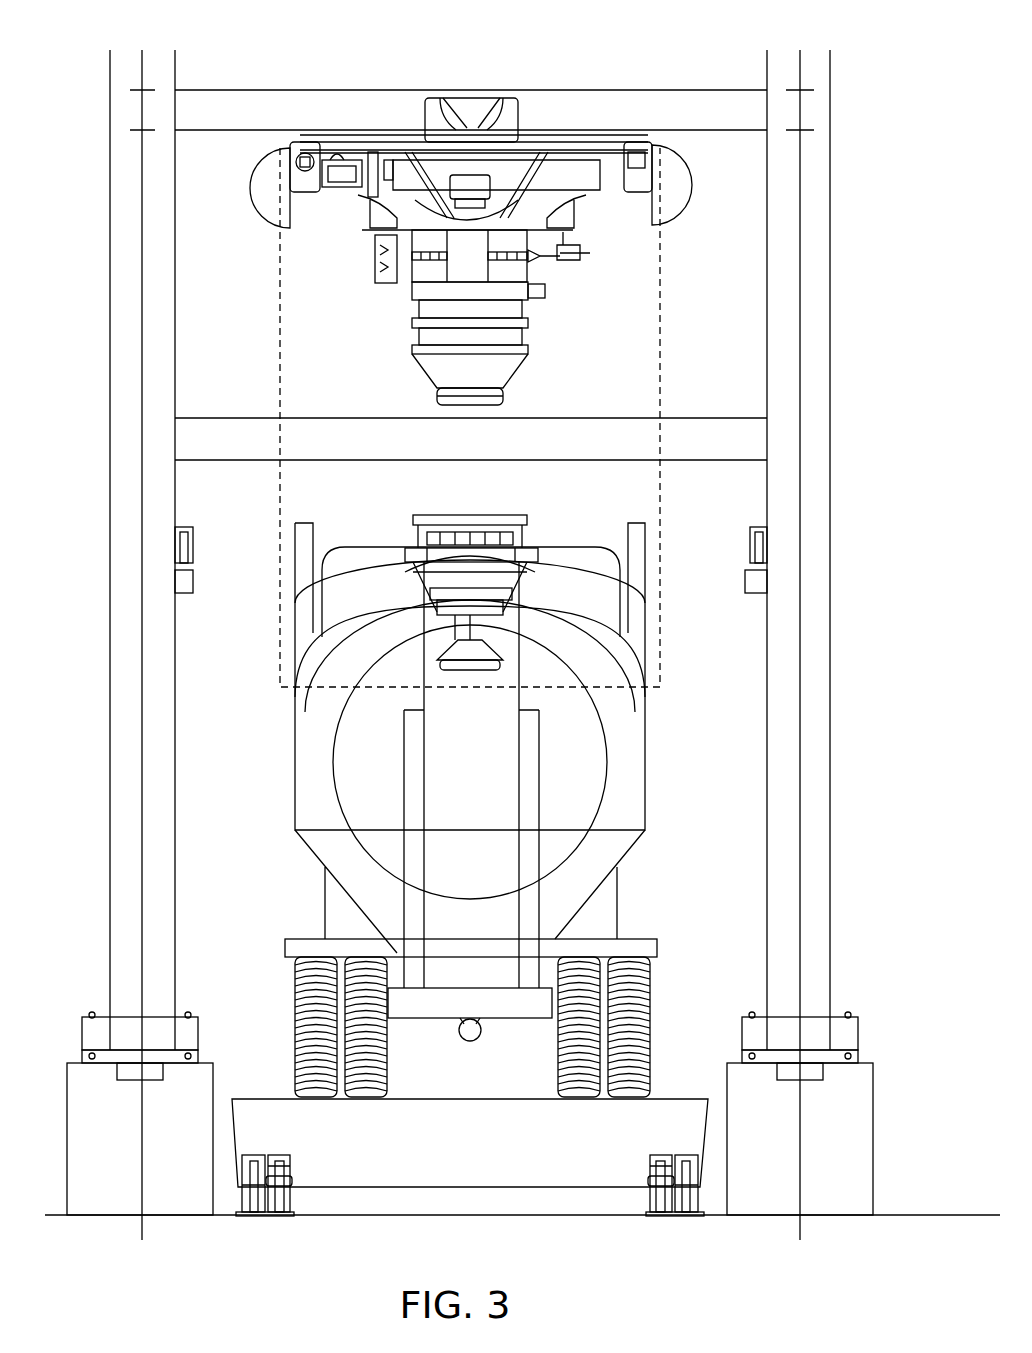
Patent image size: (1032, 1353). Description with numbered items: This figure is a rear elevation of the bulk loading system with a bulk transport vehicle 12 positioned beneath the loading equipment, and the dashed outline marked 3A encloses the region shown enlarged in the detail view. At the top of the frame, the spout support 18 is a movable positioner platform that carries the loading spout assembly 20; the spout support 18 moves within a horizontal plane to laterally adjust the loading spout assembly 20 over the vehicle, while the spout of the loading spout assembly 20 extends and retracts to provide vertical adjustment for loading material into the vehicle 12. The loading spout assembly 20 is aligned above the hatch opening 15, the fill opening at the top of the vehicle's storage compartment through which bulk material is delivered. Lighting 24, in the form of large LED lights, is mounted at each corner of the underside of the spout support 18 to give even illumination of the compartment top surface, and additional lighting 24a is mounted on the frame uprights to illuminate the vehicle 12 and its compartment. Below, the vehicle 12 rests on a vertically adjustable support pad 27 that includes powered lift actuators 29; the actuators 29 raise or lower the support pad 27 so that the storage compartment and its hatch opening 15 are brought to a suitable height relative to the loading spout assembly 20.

The bulk transport vehicle 12 is at (655, 757).
The hatch opening 15 is at (525, 533).
The spout support 18 is at (650, 143).
The loading spout assembly 20 is at (561, 334).
The lighting 24 is at (270, 195).
The additional lighting 24a is at (215, 600).
The vertically adjustable support pad 27 is at (668, 1099).
The powered lift actuators 29 is at (248, 1198).
The detail view callout 3A is at (660, 498).